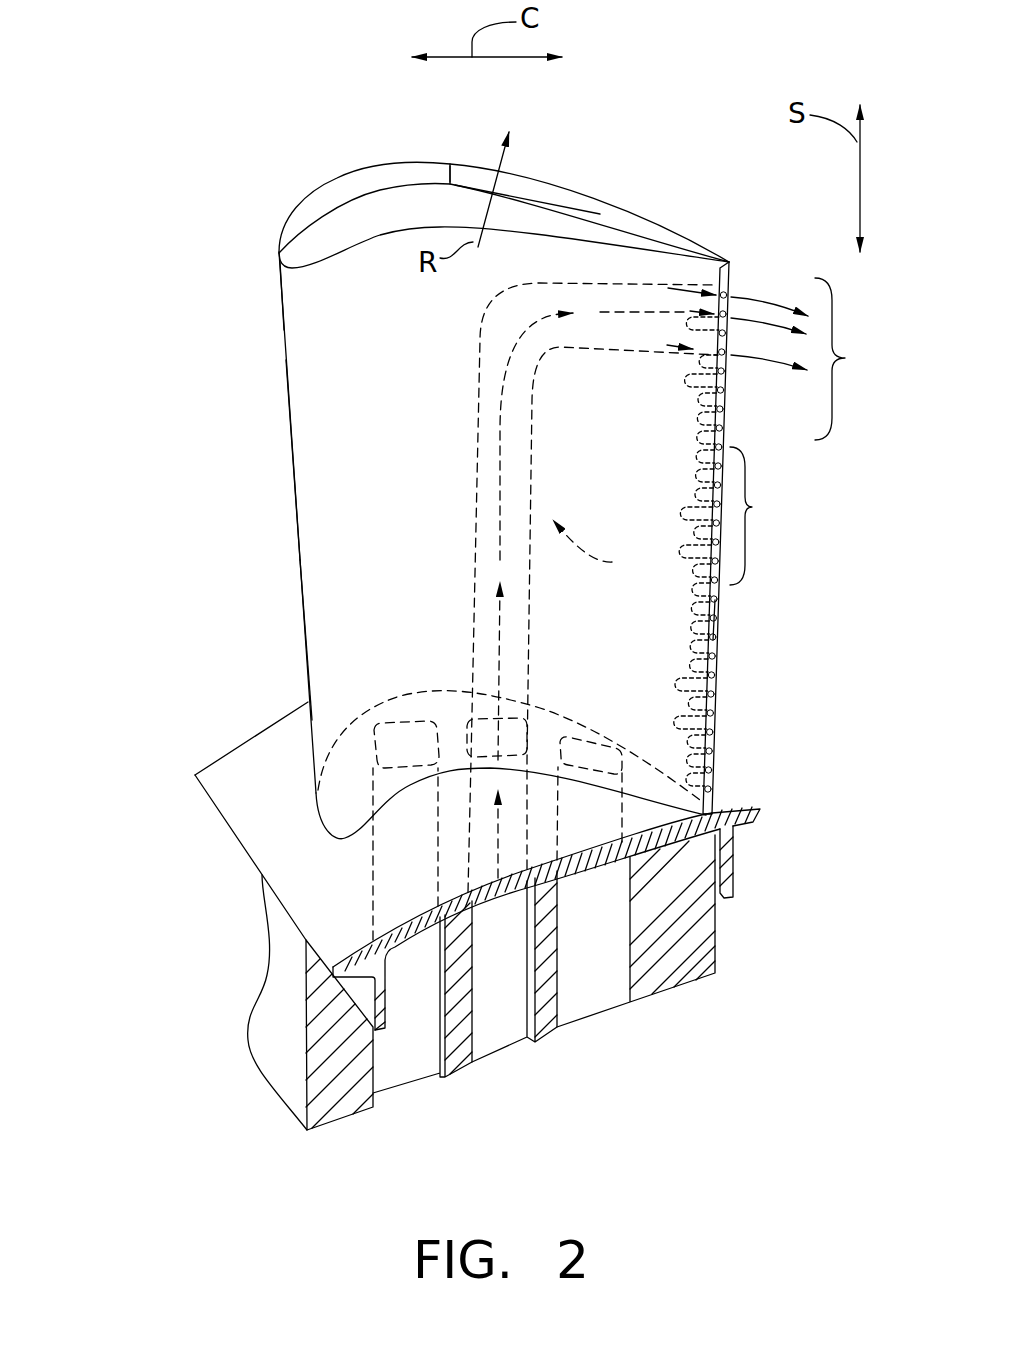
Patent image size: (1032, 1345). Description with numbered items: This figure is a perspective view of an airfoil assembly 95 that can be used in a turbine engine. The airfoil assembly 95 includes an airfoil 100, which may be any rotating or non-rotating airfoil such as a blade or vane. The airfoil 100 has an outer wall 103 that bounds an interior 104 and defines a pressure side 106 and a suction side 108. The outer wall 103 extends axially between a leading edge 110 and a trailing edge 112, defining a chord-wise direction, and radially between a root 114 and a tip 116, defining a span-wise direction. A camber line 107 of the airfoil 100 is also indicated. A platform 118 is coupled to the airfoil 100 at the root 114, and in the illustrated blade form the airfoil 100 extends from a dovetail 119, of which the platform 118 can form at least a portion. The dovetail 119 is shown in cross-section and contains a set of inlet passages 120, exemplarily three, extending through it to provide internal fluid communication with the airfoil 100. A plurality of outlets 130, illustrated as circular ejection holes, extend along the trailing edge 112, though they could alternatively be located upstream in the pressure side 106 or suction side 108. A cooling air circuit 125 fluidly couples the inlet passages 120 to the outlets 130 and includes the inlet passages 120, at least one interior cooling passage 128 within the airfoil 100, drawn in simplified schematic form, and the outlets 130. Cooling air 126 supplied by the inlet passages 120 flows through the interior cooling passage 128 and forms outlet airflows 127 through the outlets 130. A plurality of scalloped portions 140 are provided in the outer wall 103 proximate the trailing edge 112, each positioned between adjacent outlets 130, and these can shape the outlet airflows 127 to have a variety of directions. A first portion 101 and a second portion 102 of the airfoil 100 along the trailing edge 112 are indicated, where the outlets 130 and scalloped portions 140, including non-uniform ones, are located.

The airfoil assembly 95 is at (257, 180).
The airfoil 100 is at (296, 544).
The first portion 101 is at (860, 359).
The second portion 102 is at (752, 507).
The outer wall 103 is at (343, 595).
The interior 104 is at (343, 188).
The pressure side 106 is at (642, 264).
The camber line 107 is at (452, 172).
The suction side 108 is at (525, 182).
The leading edge 110 is at (288, 404).
The trailing edge 112 is at (715, 608).
The root 114 is at (320, 733).
The tip 116 is at (307, 290).
The platform 118 is at (293, 853).
The dovetail 119 is at (189, 800).
The inlet passages 120 is at (409, 1022).
The cooling air circuit 125 is at (606, 548).
The cooling air 126 is at (505, 367).
The outlet airflows 127 is at (740, 292).
The interior cooling passage 128 is at (478, 503).
The outlets 130 is at (712, 735).
The scalloped portions 140 is at (687, 510).